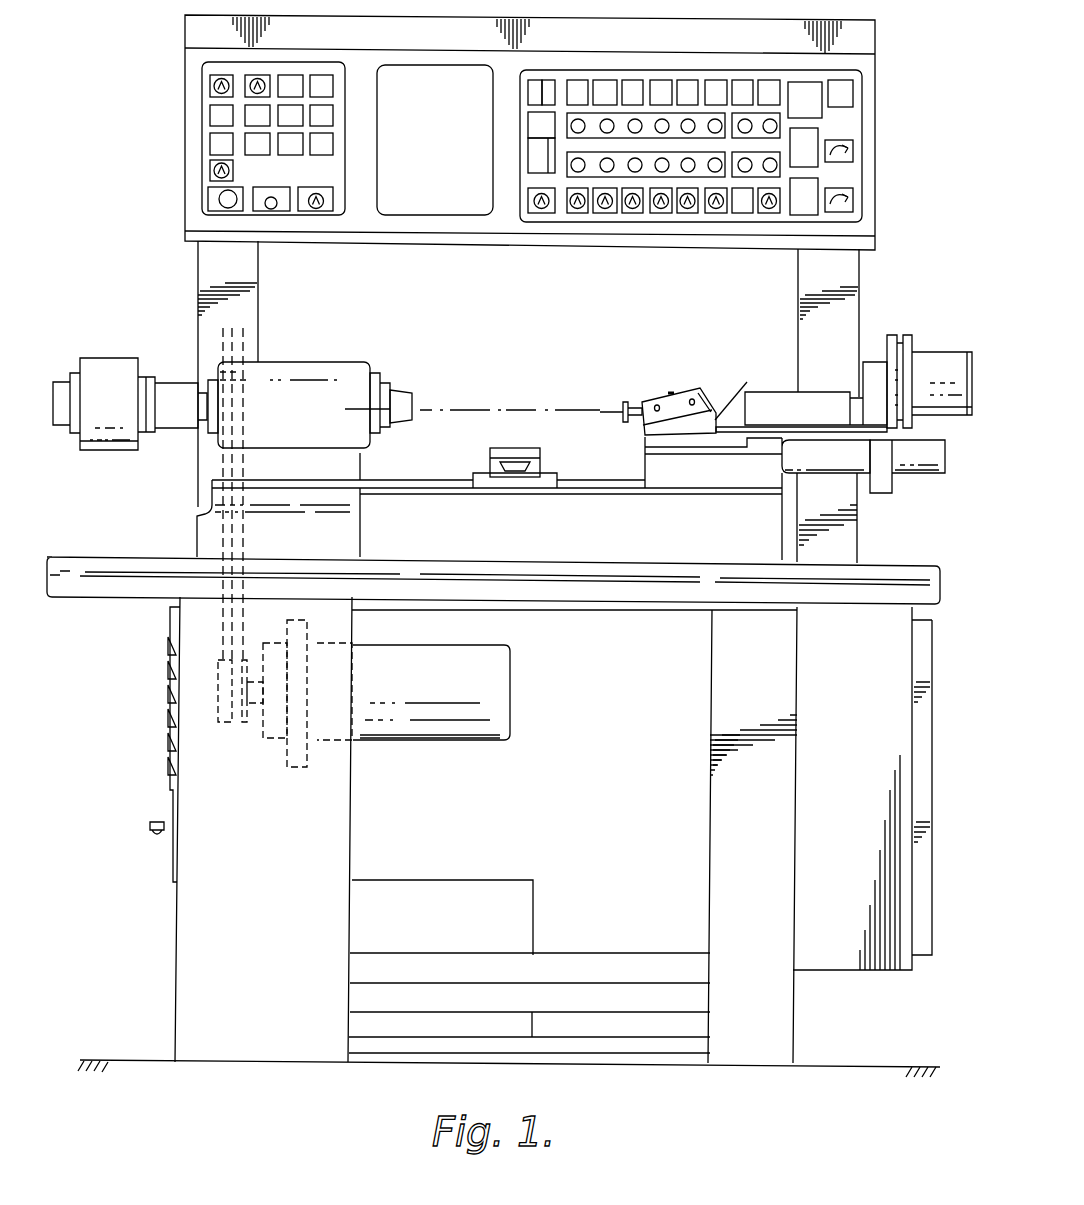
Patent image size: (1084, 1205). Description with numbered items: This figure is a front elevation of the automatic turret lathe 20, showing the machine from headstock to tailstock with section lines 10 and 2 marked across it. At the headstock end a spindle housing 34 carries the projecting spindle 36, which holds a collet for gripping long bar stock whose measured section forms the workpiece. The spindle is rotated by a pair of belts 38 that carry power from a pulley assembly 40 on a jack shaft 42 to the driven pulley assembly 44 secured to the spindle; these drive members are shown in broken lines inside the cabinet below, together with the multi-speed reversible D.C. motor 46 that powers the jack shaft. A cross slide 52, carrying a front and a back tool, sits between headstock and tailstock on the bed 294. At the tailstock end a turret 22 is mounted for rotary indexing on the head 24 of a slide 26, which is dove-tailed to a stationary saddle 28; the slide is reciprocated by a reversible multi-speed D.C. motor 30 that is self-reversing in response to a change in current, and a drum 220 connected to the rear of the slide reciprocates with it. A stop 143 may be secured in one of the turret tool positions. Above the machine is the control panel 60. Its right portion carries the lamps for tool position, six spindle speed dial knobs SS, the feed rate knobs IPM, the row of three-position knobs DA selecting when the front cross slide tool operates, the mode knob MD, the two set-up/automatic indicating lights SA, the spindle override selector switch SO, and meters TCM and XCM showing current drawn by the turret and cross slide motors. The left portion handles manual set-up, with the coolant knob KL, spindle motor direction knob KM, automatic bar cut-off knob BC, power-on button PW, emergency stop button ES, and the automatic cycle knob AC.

The turret lathe 20 is at (180, 312).
The control panel 60 is at (529, 157).
The coolant knob KL is at (257, 88).
The spindle motor knob KM is at (210, 87).
The automatic bar cut-off knob switch BC is at (210, 169).
The power-on switch button PW is at (208, 200).
The emergency stop switch button ES is at (273, 212).
The automatic cycle knob AC is at (316, 212).
The indicating lights SA is at (550, 78).
The spindle speed dial knobs SS is at (571, 127).
The feed rate dial knobs IPM is at (571, 165).
The turret motor current meter TCM is at (855, 152).
The cross slide motor current meter XCM is at (855, 199).
The mode knob MD is at (543, 213).
The three-position knobs DA is at (650, 269).
The selector switch SO is at (770, 213).
The spindle housing 34 is at (289, 370).
The spindle 36 is at (402, 390).
The driven pulley assembly 44 is at (245, 328).
The belts 38 is at (222, 539).
The pulley assembly 40 is at (217, 713).
The jack shaft 42 is at (258, 717).
The spindle drive motor 46 is at (503, 713).
The cross slide 52 is at (505, 440).
The bed 294 is at (442, 504).
The section line 10- 10 is at (535, 528).
The stop 143 is at (638, 369).
The turret 22 is at (702, 387).
The head 24 is at (713, 392).
The slide 26 is at (668, 438).
The saddle 28 is at (728, 483).
The reversible multi-speed D.C. motor 30 is at (958, 332).
The drum 220 is at (910, 473).
The section line 2- 2 is at (887, 985).